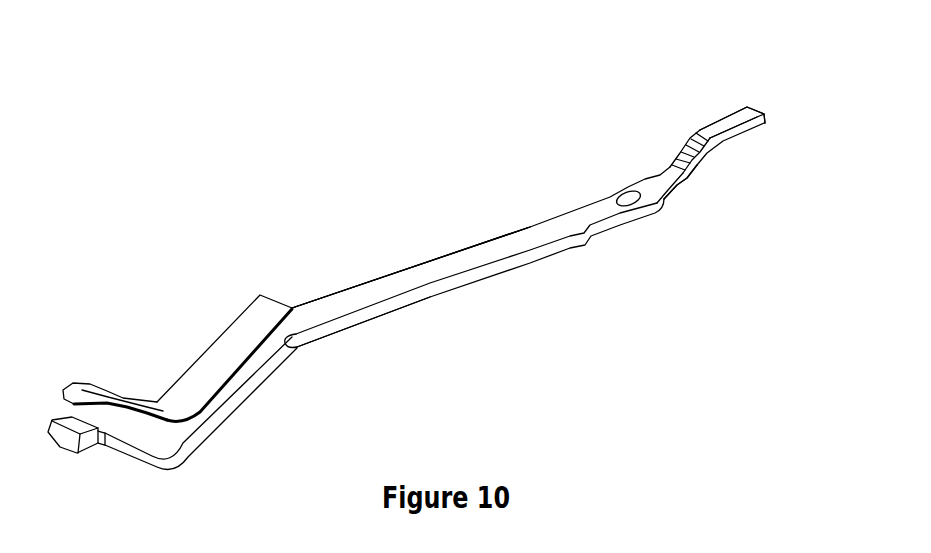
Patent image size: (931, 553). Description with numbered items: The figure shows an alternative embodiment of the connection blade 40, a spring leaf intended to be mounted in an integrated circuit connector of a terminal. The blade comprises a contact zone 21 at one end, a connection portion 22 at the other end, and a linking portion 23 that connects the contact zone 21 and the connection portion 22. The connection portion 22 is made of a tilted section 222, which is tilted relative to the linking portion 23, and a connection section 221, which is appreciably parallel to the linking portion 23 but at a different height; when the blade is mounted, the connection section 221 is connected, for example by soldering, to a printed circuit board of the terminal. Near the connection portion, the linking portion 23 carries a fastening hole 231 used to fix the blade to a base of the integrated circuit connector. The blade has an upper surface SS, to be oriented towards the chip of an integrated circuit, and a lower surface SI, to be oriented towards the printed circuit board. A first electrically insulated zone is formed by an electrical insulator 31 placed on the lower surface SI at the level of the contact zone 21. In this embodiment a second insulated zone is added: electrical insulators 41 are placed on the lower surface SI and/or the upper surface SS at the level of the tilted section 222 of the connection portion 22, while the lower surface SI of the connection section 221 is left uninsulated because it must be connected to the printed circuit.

The contact zone 21 is at (217, 413).
The connection portion 22 is at (715, 148).
The connection section 221 is at (727, 121).
The tilted section 222 is at (682, 157).
The linking portion 23 is at (483, 260).
The fastening hole 231 is at (633, 202).
The electrical insulator 31 is at (193, 371).
The connection blade 40 is at (430, 207).
The electrical insulator 41 is at (687, 173).
The lower surface SI is at (338, 300).
The upper surface SS is at (367, 320).